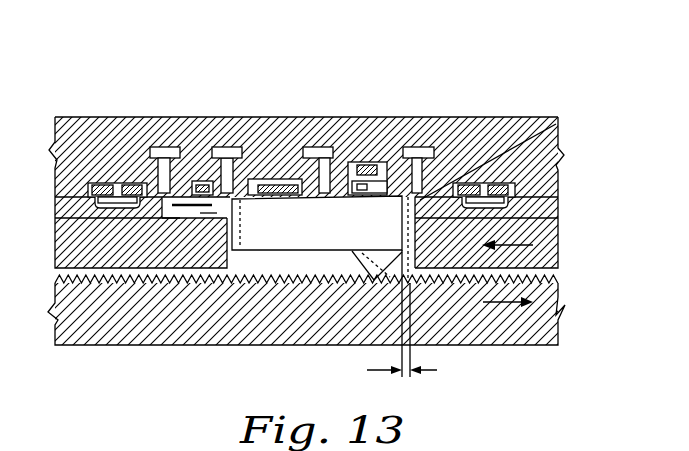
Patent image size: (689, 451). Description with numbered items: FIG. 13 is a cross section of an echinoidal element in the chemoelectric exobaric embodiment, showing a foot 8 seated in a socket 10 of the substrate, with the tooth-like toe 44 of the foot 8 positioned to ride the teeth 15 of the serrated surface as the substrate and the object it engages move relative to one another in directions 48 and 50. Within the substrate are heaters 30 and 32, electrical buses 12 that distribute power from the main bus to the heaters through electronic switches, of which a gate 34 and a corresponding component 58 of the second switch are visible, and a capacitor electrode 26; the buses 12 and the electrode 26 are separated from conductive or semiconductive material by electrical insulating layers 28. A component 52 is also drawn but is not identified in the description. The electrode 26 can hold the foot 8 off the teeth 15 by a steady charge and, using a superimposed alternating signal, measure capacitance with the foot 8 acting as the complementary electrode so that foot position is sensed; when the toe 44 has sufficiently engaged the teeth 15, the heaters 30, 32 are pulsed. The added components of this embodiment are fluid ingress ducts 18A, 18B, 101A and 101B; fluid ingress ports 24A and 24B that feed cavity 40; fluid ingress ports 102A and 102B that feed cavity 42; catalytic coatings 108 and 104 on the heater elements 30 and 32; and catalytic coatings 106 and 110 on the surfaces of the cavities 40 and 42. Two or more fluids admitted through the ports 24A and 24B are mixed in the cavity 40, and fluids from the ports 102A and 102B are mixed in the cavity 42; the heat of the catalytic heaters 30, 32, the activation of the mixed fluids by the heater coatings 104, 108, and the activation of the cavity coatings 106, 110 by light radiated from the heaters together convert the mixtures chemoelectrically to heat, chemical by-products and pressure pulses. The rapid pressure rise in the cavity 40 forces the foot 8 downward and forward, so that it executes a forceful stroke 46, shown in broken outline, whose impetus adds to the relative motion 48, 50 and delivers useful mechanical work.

The foot 8 is at (273, 231).
The socket 10 is at (392, 198).
The electrical buses 12 is at (164, 147).
The teeth 15 is at (55, 275).
The fluid ingress duct 18A is at (358, 165).
The fluid ingress duct 18B is at (497, 185).
The fluid ingress port 24A is at (348, 165).
The fluid ingress port 24B is at (455, 185).
The capacitor electrode 26 is at (276, 178).
The electrical insulating layers 28 is at (172, 147).
The heater 30 is at (423, 106).
The catalytic coating 108 is at (378, 165).
The heater 32 is at (126, 293).
The catalytic coating 104 is at (189, 208).
The gate 34 is at (55, 213).
The cavity 40 is at (433, 120).
The catalytic coating 106 is at (410, 147).
The cavity 42 is at (173, 297).
The catalytic coating 110 is at (213, 213).
The toe 44 is at (360, 270).
The stroke 46 is at (437, 370).
The direction 48 is at (527, 303).
The direction 50 is at (533, 233).
The upper layer 52 is at (558, 118).
The switch component 58 is at (558, 197).
The fluid ingress duct 101A is at (251, 178).
The fluid ingress duct 101B is at (134, 197).
The fluid ingress port 102A is at (203, 180).
The fluid ingress port 102B is at (126, 182).